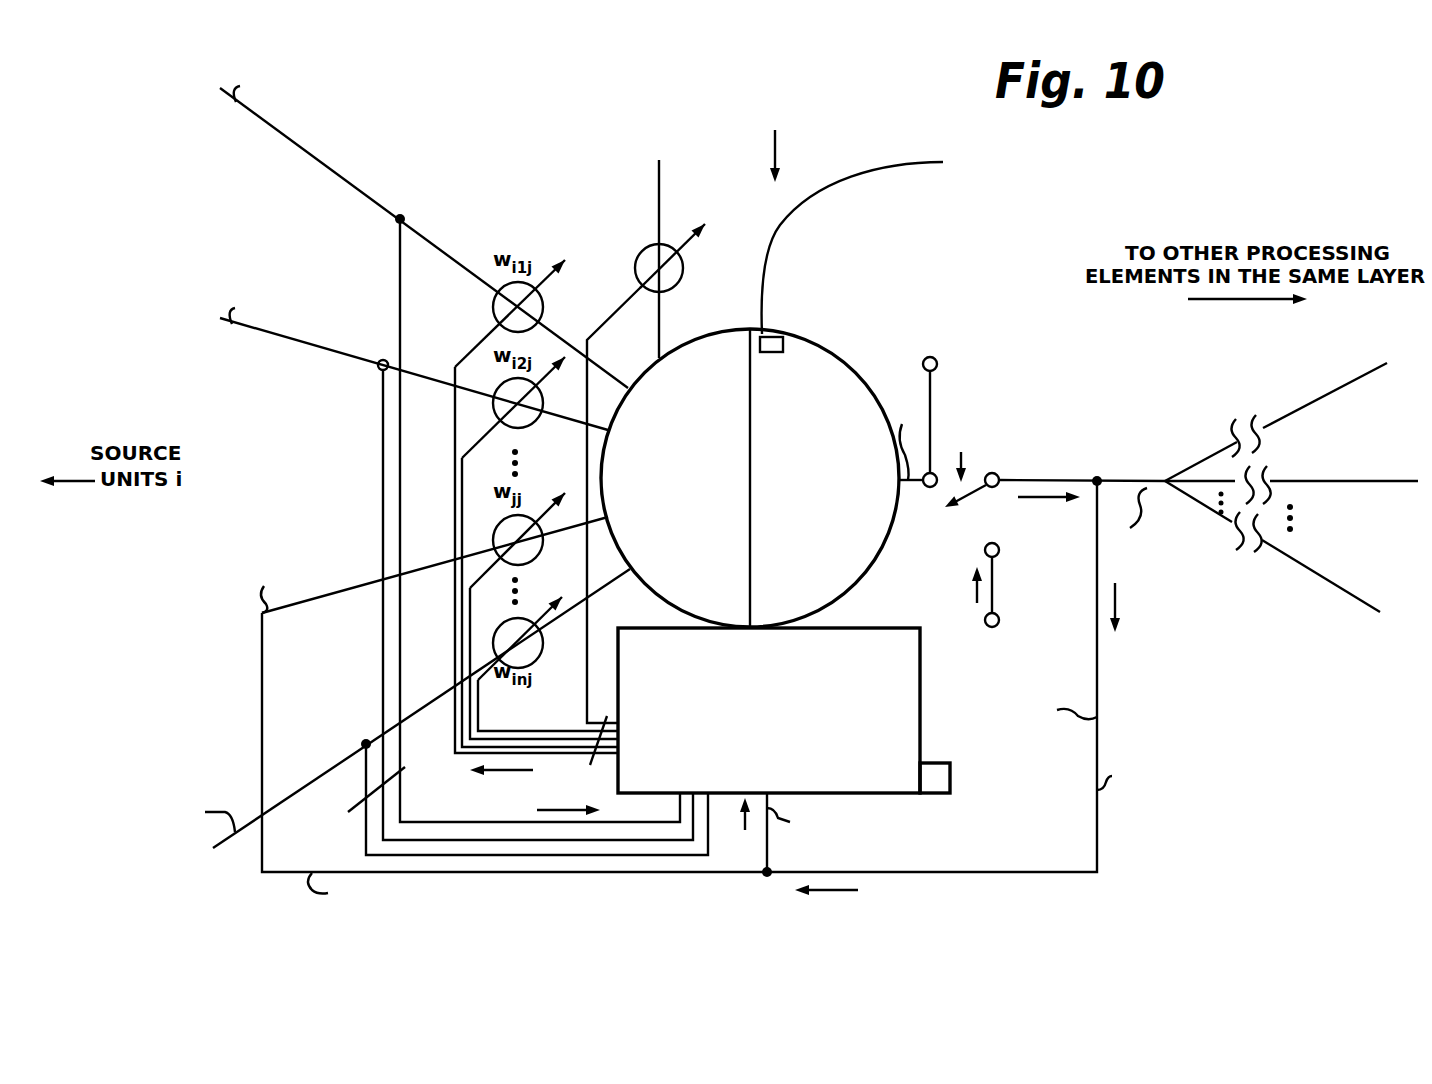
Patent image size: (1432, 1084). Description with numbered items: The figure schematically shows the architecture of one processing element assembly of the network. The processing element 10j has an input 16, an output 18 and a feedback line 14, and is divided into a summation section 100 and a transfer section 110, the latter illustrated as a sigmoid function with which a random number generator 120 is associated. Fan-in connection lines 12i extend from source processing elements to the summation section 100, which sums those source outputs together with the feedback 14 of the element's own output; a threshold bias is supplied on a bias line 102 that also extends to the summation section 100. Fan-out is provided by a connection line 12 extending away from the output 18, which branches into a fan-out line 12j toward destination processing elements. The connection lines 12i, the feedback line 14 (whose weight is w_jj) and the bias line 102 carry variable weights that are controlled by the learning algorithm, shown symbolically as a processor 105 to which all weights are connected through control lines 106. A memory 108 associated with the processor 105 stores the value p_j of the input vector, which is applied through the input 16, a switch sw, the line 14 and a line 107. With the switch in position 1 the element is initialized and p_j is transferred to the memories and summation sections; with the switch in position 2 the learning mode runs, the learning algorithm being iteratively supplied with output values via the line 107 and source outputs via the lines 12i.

The switch position 1 is at (1000, 544).
The switch position 2 is at (932, 490).
The processing element 10j is at (806, 340).
The connection line 12 is at (1050, 481).
The connection lines 12i is at (419, 236).
The fan-out line 12j is at (1207, 461).
The feedback line 14 is at (330, 598).
The input 16 is at (1000, 622).
The output 18 is at (937, 361).
The summation section 100 is at (723, 386).
The bias line 102 is at (661, 320).
The processor 105 is at (862, 628).
The control lines 106 is at (510, 537).
The line 107 is at (770, 862).
The memory 108 is at (950, 778).
The transfer section 110 is at (818, 386).
The random number generator 120 is at (777, 335).